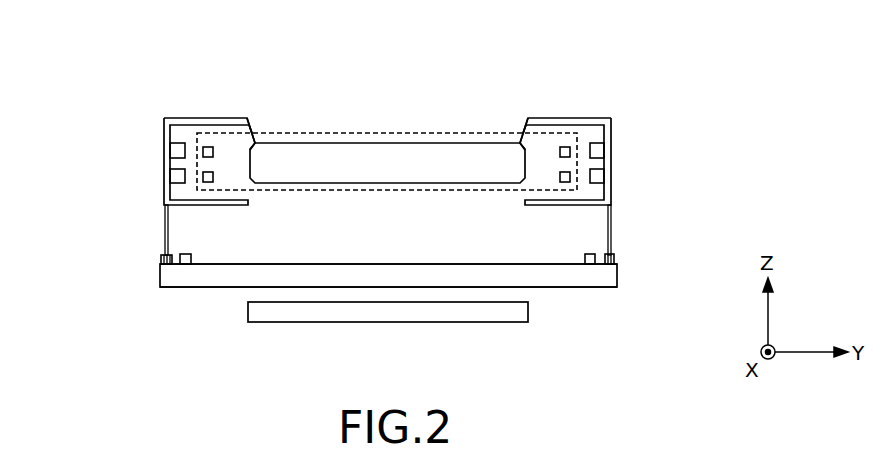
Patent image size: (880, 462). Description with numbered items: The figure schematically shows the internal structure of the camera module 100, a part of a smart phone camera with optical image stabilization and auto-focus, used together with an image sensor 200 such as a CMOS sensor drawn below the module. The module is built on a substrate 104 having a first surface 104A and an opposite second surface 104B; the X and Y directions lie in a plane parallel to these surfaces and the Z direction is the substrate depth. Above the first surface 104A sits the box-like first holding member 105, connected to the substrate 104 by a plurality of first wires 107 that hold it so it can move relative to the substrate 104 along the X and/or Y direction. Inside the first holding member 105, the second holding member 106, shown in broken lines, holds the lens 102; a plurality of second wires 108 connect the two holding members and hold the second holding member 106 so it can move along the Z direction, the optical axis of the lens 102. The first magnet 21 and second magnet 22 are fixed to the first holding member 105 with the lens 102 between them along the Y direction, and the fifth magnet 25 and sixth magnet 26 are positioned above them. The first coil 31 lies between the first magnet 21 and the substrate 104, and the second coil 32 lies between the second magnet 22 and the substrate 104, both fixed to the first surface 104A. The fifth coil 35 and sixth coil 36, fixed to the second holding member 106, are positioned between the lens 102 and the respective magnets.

The camera module 100 is at (662, 102).
The first holding member 105 is at (193, 118).
The second wires 108 is at (253, 137).
The lens 102 is at (390, 155).
The second holding member 106 is at (333, 130).
The fifth magnet 25 is at (178, 151).
The first magnet 21 is at (178, 177).
The fifth coil 35 is at (212, 176).
The sixth coil 36 is at (566, 175).
The sixth magnet 26 is at (600, 152).
The second magnet 22 is at (600, 177).
The first wires 107 is at (163, 225).
The first coil 31 is at (183, 265).
The second coil 32 is at (592, 258).
The substrate 104 is at (603, 275).
The first surface 104A is at (225, 264).
The second surface 104B is at (553, 287).
The image sensor 200 is at (385, 313).